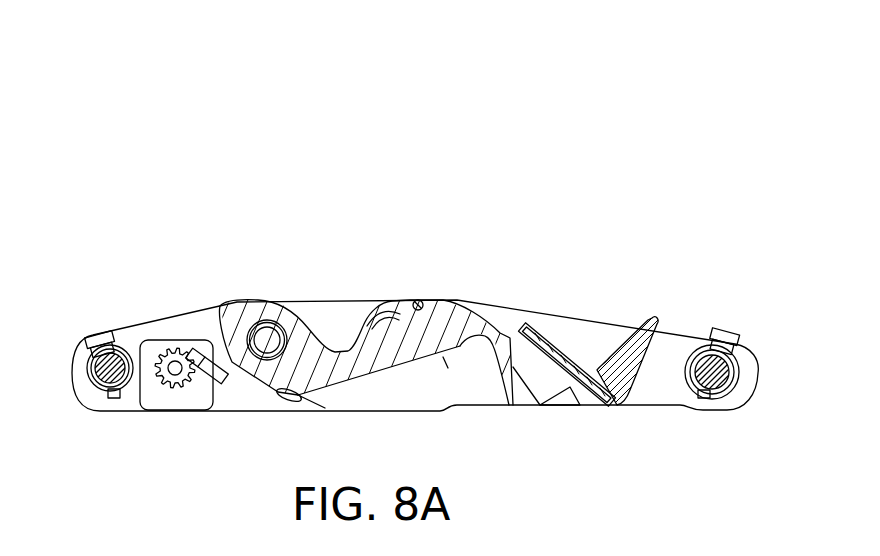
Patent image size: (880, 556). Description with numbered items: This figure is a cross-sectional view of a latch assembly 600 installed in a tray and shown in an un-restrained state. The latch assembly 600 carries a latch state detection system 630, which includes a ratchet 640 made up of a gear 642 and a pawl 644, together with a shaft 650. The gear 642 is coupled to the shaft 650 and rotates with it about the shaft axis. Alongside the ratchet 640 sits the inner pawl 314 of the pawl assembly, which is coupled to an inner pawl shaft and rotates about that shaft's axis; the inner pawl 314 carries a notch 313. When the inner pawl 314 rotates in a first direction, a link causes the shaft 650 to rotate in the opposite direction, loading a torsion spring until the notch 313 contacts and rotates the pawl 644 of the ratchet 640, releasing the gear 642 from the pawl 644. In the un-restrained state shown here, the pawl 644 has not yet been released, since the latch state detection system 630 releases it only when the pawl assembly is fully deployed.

The latch assembly 600 is at (530, 155).
The latch state detection system 630 is at (112, 160).
The shaft 650 is at (172, 364).
The ratchet 640 is at (205, 385).
The gear 642 is at (175, 352).
The pawl 644 is at (215, 363).
The notch 313 is at (228, 325).
The inner pawl 314 is at (342, 372).